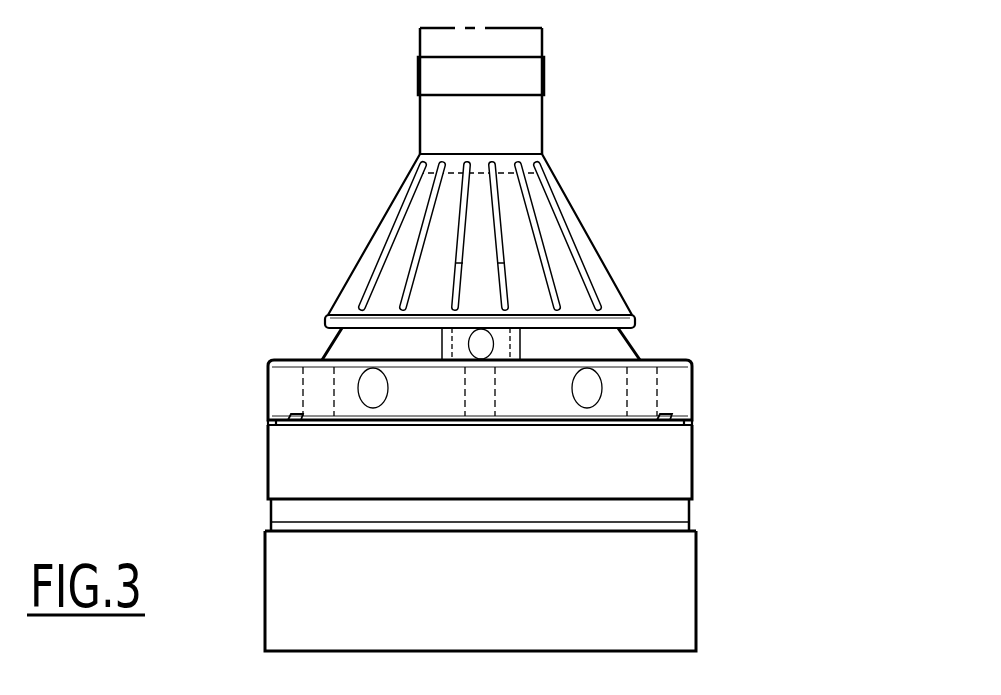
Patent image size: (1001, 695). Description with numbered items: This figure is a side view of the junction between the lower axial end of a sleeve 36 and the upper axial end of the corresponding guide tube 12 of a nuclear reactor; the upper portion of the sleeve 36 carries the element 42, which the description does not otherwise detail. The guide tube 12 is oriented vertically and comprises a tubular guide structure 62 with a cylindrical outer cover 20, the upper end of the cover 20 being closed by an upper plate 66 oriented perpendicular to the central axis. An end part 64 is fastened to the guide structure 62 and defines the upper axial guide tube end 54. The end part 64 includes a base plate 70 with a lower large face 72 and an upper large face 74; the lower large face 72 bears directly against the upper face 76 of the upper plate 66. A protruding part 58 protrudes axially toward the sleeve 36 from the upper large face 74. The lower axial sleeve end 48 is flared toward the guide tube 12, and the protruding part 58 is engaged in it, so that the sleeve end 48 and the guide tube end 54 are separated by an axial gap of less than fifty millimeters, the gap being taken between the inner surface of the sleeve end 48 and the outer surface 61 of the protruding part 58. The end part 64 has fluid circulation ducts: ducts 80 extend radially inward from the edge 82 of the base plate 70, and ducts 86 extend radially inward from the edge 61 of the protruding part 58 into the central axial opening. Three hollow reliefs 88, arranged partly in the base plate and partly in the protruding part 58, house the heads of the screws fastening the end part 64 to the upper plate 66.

The guide tube 12 is at (210, 507).
The cylindrical outer cover 20 is at (677, 628).
The sleeve 36 is at (362, 58).
The shaft end 42 is at (515, 42).
The lower axial sleeve end 48 is at (590, 156).
The upper axial guide tube end 54 is at (815, 360).
The protruding part 58 is at (590, 377).
The outer surface of the protruding part 61 is at (328, 343).
The tubular guide structure 62 is at (713, 486).
The end part 64 is at (693, 335).
The upper plate 66 is at (290, 466).
The base plate 70 is at (662, 380).
The lower large face 72 is at (285, 427).
The upper large face 74 is at (287, 360).
The upper face of the upper plate 76 is at (350, 420).
The fluid circulation ducts 80 is at (482, 343).
The edge of the base plate 82 is at (677, 397).
The fluid circulation ducts 86 is at (567, 340).
The hollow reliefs 88 is at (457, 345).